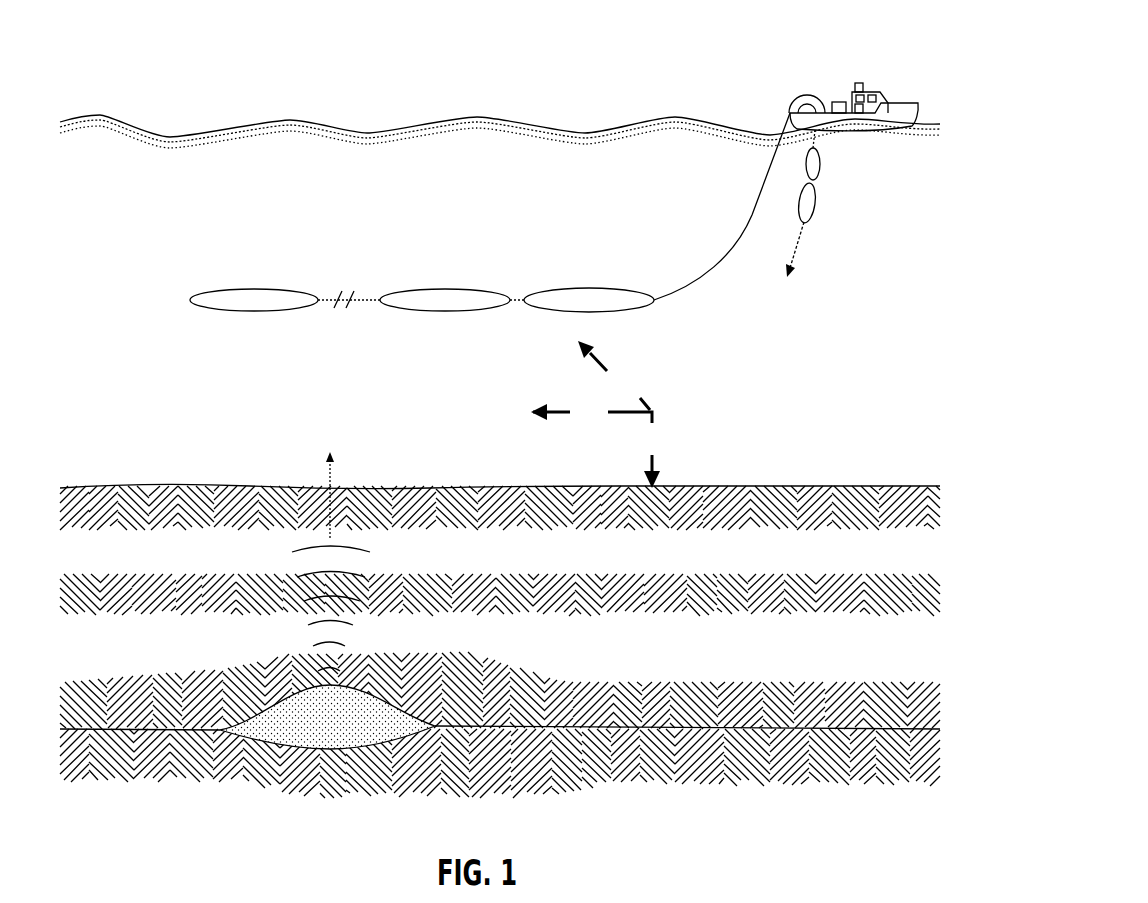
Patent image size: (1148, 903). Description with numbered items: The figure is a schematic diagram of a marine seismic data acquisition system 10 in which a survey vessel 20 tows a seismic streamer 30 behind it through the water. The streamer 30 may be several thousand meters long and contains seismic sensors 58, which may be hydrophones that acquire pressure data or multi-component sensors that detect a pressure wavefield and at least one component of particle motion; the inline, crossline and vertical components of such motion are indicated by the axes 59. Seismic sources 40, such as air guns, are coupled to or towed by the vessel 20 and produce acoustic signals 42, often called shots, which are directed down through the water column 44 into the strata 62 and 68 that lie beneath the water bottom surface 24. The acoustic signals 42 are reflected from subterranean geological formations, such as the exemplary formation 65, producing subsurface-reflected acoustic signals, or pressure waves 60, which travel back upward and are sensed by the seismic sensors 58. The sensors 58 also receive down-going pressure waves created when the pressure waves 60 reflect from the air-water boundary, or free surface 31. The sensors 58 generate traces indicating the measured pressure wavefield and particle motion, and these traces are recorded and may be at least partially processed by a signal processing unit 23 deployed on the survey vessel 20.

The marine seismic data acquisition system 10 is at (269, 78).
The survey vessel 20 is at (910, 102).
The signal processing unit 23 is at (839, 101).
The water bottom surface 24 is at (815, 485).
The seismic streamer 30 is at (752, 210).
The free surface 31 is at (441, 118).
The seismic source 40 is at (820, 163).
The acoustic signal 42 is at (797, 243).
The water column 44 is at (827, 321).
The seismic sensor 58 is at (279, 289).
The axes 59 is at (662, 364).
The pressure wave 60 is at (284, 635).
The stratum 62 is at (500, 691).
The formation 65 is at (327, 717).
The stratum 68 is at (500, 763).